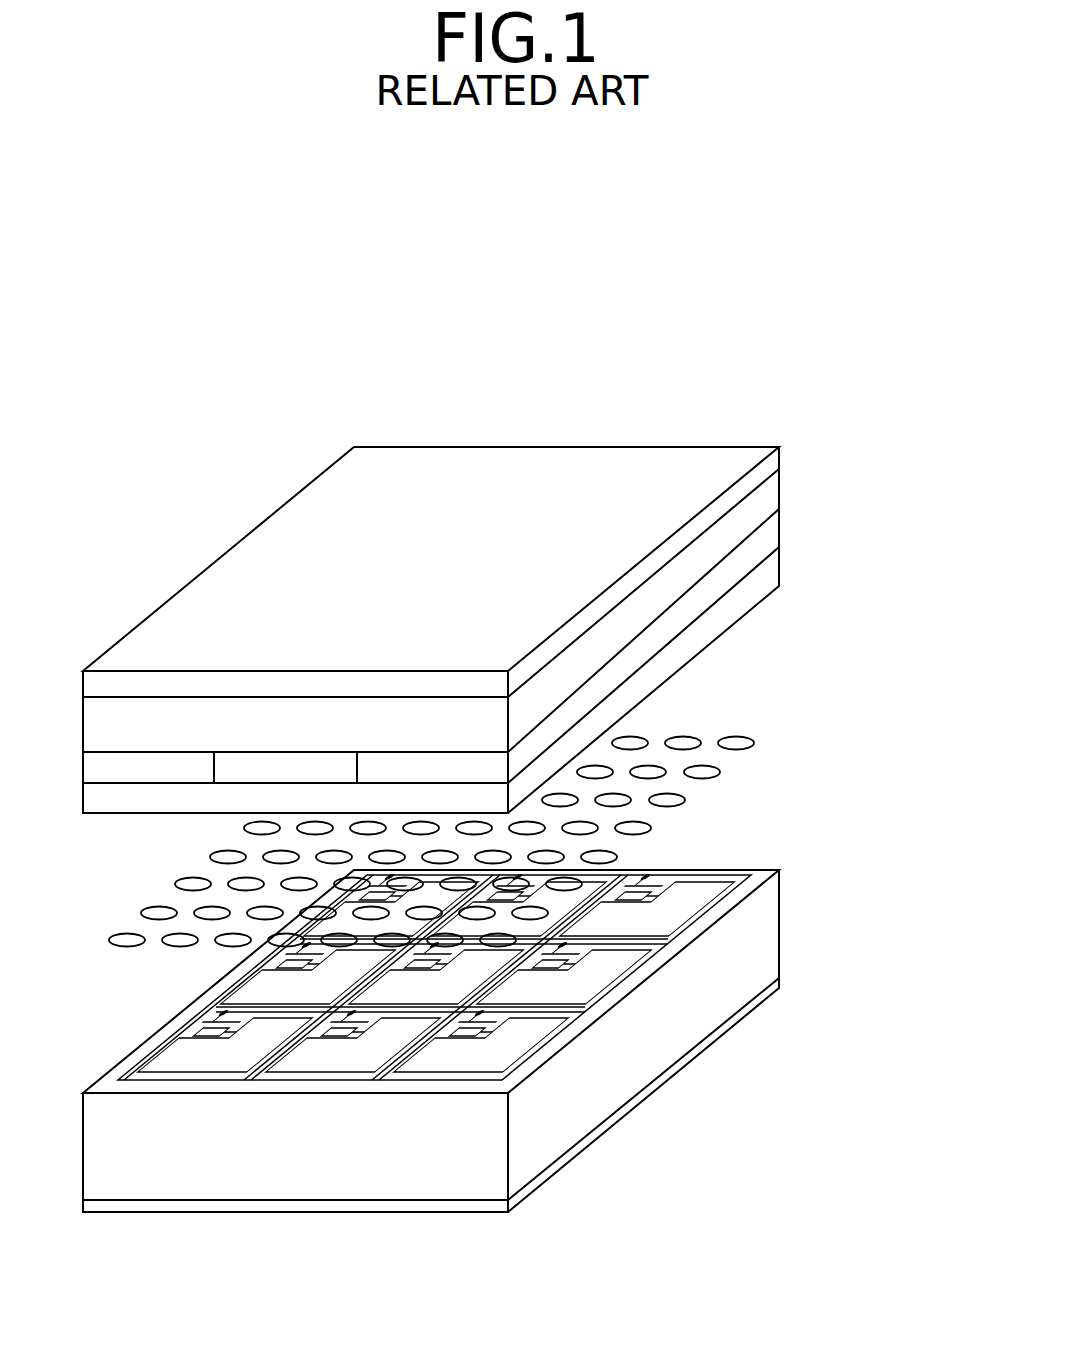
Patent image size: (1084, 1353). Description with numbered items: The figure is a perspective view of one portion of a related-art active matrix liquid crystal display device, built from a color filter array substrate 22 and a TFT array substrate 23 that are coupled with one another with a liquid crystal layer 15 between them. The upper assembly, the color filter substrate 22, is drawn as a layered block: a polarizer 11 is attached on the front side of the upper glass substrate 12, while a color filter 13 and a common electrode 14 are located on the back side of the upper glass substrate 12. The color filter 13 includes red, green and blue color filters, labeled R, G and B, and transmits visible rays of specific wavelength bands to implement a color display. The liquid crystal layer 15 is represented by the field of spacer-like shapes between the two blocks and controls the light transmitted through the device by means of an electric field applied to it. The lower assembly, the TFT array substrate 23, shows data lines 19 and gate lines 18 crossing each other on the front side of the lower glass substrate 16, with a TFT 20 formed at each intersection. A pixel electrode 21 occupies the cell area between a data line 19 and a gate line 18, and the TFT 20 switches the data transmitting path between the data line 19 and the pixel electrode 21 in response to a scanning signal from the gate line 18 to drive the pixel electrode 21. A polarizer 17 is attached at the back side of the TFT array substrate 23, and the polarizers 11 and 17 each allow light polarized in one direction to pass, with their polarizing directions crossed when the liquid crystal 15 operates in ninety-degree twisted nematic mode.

The polarizer 11 is at (779, 462).
The upper glass substrate 12 is at (779, 503).
The color filter 13 is at (779, 543).
The common electrode 14 is at (779, 582).
The liquid crystal layer 15 is at (740, 743).
The lower glass substrate 16 is at (770, 933).
The polarizer 17 is at (779, 983).
The gate line 18 is at (670, 945).
The data line 19 is at (383, 1077).
The TFT 20 is at (477, 1033).
The pixel electrode 21 is at (557, 1033).
The color filter array substrate 22 is at (513, 613).
The TFT array substrate 23 is at (518, 1069).